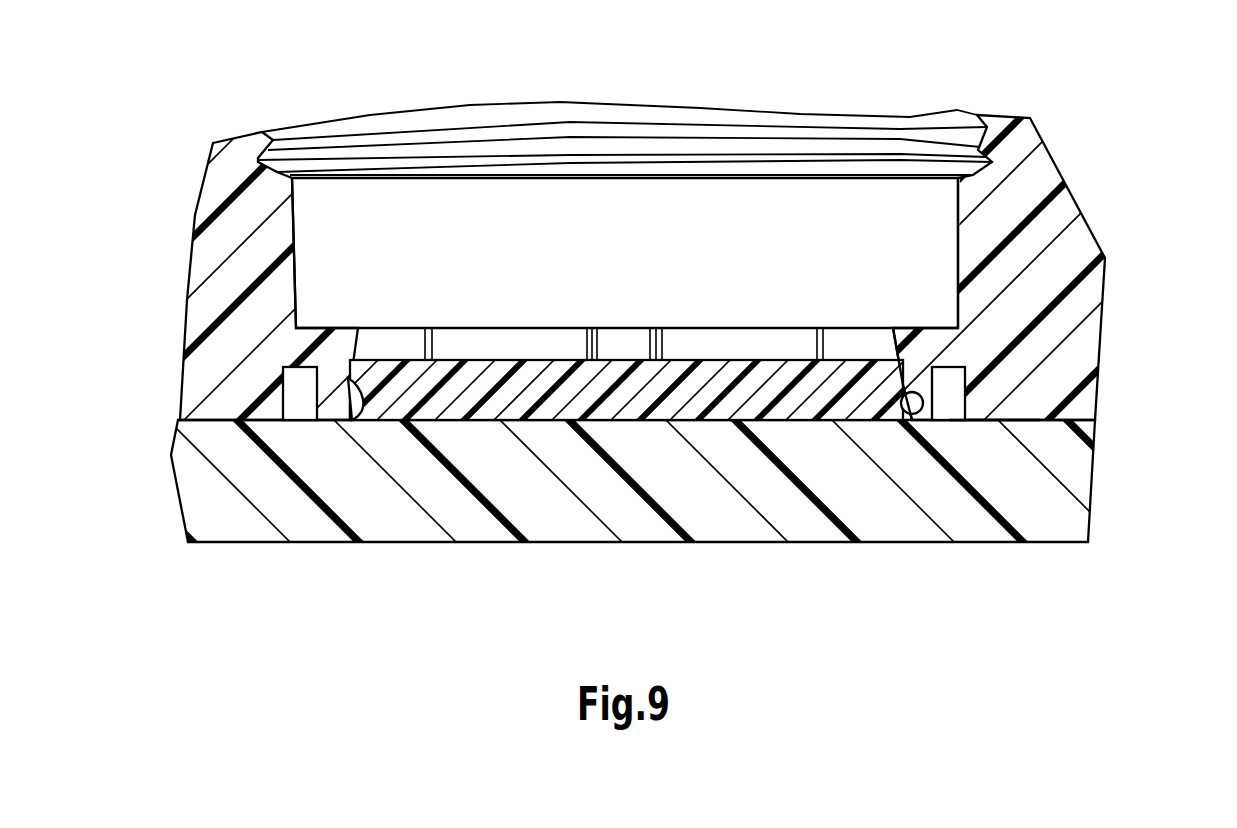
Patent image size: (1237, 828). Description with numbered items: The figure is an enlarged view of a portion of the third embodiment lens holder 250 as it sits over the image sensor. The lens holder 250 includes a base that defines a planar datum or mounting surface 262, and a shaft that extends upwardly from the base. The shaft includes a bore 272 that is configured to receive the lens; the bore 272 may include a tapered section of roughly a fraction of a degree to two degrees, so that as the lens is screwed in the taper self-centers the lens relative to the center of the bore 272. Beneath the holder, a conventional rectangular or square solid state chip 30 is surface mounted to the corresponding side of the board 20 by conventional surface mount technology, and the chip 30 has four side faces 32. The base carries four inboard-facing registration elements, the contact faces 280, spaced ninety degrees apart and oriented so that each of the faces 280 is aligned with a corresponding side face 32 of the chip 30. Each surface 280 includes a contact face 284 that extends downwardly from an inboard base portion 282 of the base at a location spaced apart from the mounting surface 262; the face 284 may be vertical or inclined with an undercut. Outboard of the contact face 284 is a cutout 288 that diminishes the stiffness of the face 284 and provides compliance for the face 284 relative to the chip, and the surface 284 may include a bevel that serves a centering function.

The board 20 is at (940, 505).
The chip 30 is at (480, 387).
The side faces 32 is at (907, 388).
The lens holder 250 is at (1048, 233).
The mounting surface 262 is at (990, 425).
The bore 272 is at (724, 215).
The contact faces 280 is at (367, 393).
The inboard base portion 282 is at (935, 330).
The contact face 284 is at (903, 378).
The cutout 288 is at (295, 400).